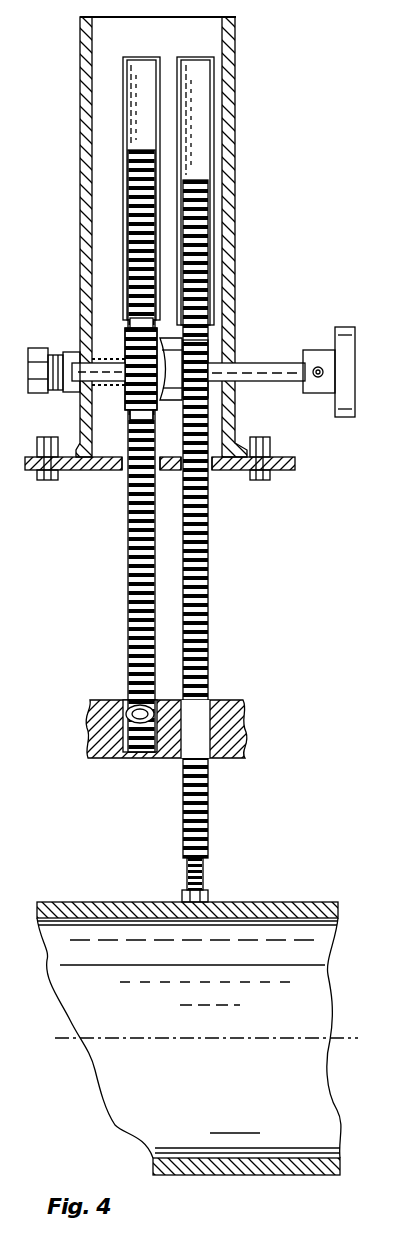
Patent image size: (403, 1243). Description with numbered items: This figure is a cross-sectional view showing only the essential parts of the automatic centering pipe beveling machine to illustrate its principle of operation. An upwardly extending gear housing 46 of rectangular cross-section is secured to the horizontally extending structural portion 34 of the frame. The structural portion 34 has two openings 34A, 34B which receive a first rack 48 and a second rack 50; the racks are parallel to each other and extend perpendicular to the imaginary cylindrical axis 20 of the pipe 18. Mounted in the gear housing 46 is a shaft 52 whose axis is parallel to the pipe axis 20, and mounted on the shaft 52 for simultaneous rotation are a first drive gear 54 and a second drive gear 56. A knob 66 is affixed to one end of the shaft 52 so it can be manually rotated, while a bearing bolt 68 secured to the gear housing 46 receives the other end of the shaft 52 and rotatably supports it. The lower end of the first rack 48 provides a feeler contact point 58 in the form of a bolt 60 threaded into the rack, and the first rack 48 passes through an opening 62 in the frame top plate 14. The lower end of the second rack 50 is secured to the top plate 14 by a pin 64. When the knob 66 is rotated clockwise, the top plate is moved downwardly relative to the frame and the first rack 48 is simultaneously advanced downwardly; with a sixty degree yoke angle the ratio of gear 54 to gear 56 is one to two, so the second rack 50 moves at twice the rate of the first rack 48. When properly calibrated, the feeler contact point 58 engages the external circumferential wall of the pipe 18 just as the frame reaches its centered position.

The top plate 14 is at (232, 730).
The pipe 18 is at (278, 908).
The cylindrical axis 20 is at (340, 1038).
The horizontally extending structural portion 34 is at (292, 472).
The opening 34A is at (208, 482).
The opening 34B is at (128, 482).
The gear housing 46 is at (230, 118).
The first rack 48 is at (196, 598).
The second rack 50 is at (147, 577).
The shaft 52 is at (278, 368).
The first drive gear 54 is at (213, 362).
The second drive gear 56 is at (128, 340).
The feeler contact point 58 is at (193, 903).
The bolt 60 is at (200, 876).
The opening 62 is at (209, 716).
The pin 64 is at (138, 708).
The knob 66 is at (346, 365).
The bearing bolt 68 is at (38, 396).